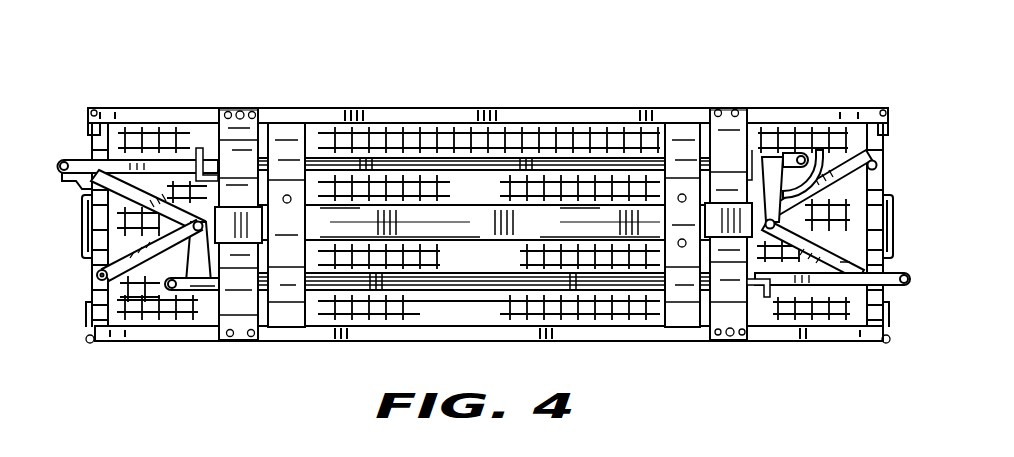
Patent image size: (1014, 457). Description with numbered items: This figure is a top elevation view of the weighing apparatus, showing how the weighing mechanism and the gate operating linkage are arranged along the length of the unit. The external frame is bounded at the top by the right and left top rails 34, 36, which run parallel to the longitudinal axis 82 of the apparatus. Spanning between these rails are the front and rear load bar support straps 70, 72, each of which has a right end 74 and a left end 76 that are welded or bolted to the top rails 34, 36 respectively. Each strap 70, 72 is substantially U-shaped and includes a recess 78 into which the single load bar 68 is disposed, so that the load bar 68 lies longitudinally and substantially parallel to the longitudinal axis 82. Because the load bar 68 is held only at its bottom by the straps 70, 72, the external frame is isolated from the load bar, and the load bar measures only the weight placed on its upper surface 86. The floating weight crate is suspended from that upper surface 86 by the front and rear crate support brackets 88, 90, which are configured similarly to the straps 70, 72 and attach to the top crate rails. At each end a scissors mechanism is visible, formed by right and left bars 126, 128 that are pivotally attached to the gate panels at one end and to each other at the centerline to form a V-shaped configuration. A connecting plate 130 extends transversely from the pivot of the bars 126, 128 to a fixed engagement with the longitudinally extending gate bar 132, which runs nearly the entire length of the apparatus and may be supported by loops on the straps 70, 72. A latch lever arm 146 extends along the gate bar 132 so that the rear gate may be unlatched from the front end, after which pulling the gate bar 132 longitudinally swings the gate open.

The right top rail 34 is at (563, 338).
The left top rail 36 is at (634, 107).
The load bar 68 is at (457, 217).
The front load bar support strap 70 is at (222, 143).
The rear load bar support strap 72 is at (732, 104).
The right end 74 is at (222, 333).
The left end 76 is at (245, 108).
The recess 78 is at (245, 262).
The longitudinal axis 82 is at (77, 226).
The upper surface 86 is at (537, 222).
The front crate support bracket 88 is at (290, 313).
The rear crate support bracket 90 is at (688, 313).
The right bar 126 is at (838, 258).
The left bar 128 is at (865, 158).
The connecting plate 130 is at (813, 148).
The gate bar 132 is at (377, 157).
The latch lever arm 146 is at (587, 160).